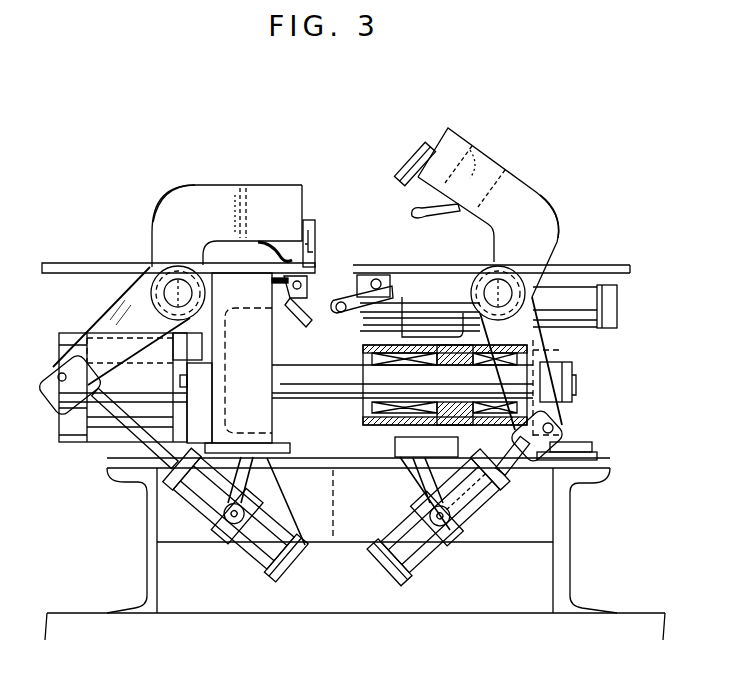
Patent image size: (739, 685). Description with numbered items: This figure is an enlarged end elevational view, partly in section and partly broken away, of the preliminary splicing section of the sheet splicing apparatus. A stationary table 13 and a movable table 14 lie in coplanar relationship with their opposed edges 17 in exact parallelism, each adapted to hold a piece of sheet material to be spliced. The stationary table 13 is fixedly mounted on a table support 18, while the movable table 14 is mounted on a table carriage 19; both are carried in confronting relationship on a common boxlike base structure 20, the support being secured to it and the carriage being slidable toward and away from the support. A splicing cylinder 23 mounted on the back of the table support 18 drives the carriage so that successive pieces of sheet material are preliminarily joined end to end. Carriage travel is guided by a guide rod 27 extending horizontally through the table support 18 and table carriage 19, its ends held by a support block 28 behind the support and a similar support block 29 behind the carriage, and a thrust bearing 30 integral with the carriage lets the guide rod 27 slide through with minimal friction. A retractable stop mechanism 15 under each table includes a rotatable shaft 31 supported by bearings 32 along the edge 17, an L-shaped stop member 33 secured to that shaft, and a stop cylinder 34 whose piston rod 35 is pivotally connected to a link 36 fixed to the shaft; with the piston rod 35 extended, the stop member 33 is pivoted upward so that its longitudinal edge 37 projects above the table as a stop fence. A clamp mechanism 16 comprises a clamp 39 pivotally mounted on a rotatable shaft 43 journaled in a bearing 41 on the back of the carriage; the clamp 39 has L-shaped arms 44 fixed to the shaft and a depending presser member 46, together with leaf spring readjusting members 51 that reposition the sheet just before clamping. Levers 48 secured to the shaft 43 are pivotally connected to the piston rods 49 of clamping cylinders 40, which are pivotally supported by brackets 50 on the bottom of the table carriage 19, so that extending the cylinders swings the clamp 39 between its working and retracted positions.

The stationary table 13 is at (75, 263).
The movable table 14 is at (617, 264).
The retractable stop mechanism 15 is at (347, 330).
The clamp mechanism 16 is at (228, 178).
The opposed edge 17 is at (316, 260).
The table support 18 is at (272, 435).
The table carriage 19 is at (485, 485).
The base structure 20 is at (563, 560).
The splicing cylinder 23 is at (97, 440).
The guide rod 27 is at (300, 392).
The support block 28 is at (195, 406).
The support block 29 is at (563, 412).
The thrust bearing 30 is at (373, 417).
The rotatable shaft 31 is at (270, 289).
The bearing 32 is at (293, 277).
The stop member 33 is at (280, 324).
The stop cylinder 34 is at (613, 313).
The piston rod 35 is at (450, 307).
The link 36 is at (400, 300).
The longitudinal edge 37 is at (310, 323).
The clamp 39 is at (273, 180).
The clamping cylinder 40 is at (263, 547).
The bearing 41 is at (150, 281).
The rotatable shaft 43 is at (170, 285).
The L-shaped arm 44 is at (192, 192).
The presser member 46 is at (313, 220).
The lever 48 is at (107, 328).
The piston rod 49 is at (147, 445).
The bracket 50 is at (260, 487).
The readjusting member 51 is at (260, 238).